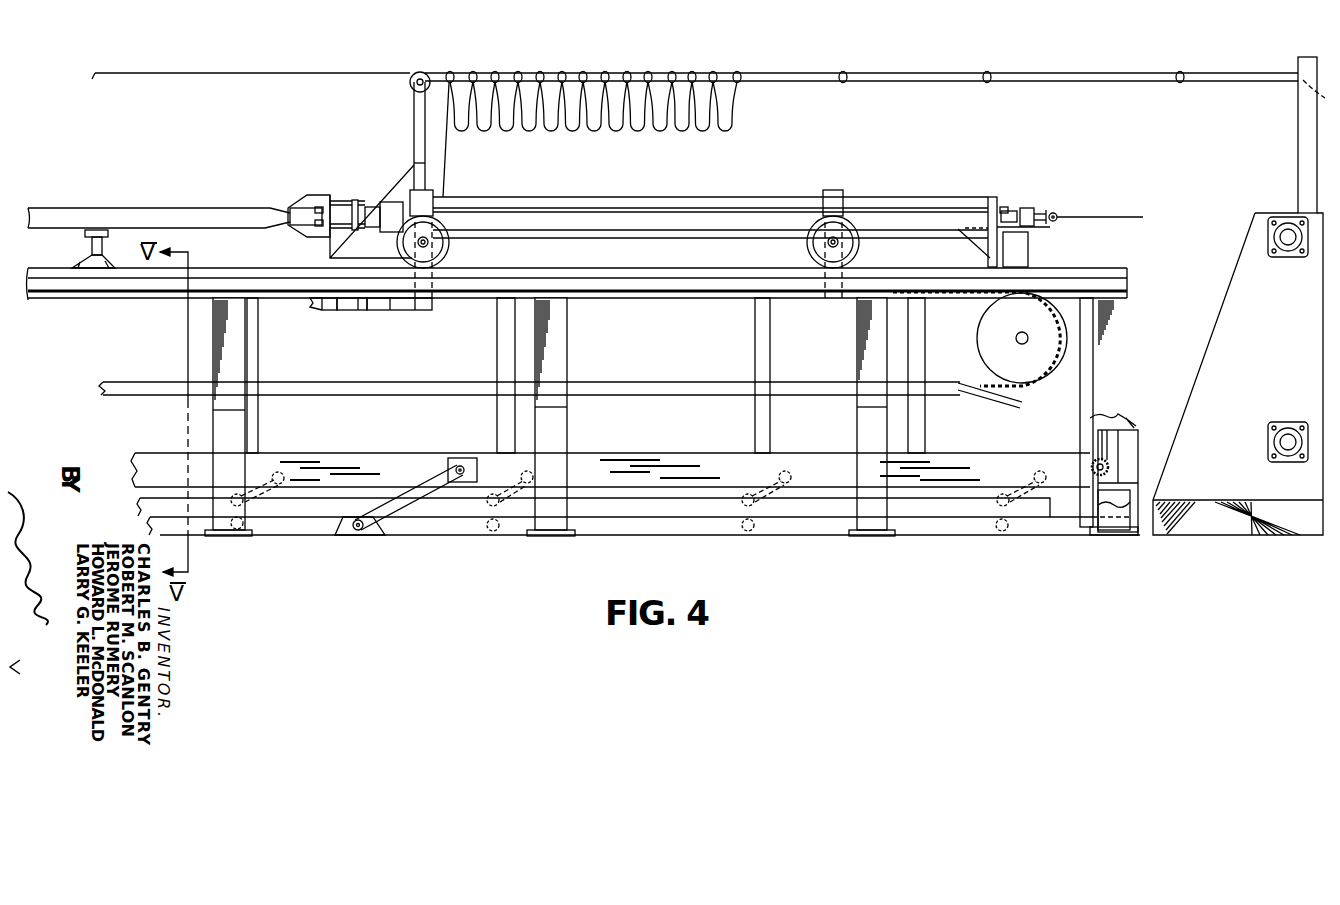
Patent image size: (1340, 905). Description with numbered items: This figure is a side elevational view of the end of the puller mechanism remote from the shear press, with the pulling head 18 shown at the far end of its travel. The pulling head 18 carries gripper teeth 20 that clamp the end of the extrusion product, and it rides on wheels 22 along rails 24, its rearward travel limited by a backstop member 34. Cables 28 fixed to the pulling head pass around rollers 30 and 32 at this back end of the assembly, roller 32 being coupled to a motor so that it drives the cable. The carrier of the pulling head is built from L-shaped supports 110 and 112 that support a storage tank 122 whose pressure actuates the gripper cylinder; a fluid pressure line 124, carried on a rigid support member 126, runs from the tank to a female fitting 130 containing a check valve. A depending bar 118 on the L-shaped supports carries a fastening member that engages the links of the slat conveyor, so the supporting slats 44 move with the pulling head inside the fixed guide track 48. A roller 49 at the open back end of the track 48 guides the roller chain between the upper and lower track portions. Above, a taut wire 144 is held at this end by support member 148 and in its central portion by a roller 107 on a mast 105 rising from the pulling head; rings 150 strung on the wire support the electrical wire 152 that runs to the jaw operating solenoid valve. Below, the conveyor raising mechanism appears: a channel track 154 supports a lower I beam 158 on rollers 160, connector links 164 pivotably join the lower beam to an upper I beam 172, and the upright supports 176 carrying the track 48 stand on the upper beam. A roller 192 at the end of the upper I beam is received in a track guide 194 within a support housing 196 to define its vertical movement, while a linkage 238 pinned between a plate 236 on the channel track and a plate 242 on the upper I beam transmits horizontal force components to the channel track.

The pulling head 18 is at (326, 192).
The gripper teeth 20 is at (293, 211).
The wheels 22 is at (446, 246).
The rails 24 is at (628, 283).
The cables 28 is at (1097, 216).
The roller 30 is at (1268, 233).
The roller 32 is at (1278, 458).
The backstop member 34 is at (1020, 250).
The supporting slats 44 is at (92, 263).
The guide track 48 is at (465, 295).
The roller 49 is at (990, 350).
The mast 105 is at (414, 128).
The roller 107 is at (411, 85).
The L-shaped support 110 is at (704, 200).
The L-shaped support 112 is at (736, 236).
The depending bar 118 is at (990, 239).
The storage tank 122 is at (579, 216).
The fluid pressure line 124 is at (380, 311).
The rigid support member 126 is at (411, 311).
The female fitting 130 is at (333, 311).
The taut wire 144 is at (1130, 71).
The support member 148 is at (1300, 132).
The rings 150 is at (740, 73).
The electrical wire 152 is at (735, 119).
The channel track 154 is at (825, 522).
The I beam 158 is at (1028, 510).
The rollers 160 is at (490, 532).
The connector links 164 is at (262, 492).
The upper I beam 172 is at (413, 466).
The upright supports 176 is at (500, 343).
The roller 192 is at (1096, 464).
The track guide 194 is at (1104, 452).
The support housing 196 is at (1134, 416).
The plate 236 is at (372, 532).
The linkage 238 is at (422, 494).
The plate 242 is at (478, 470).